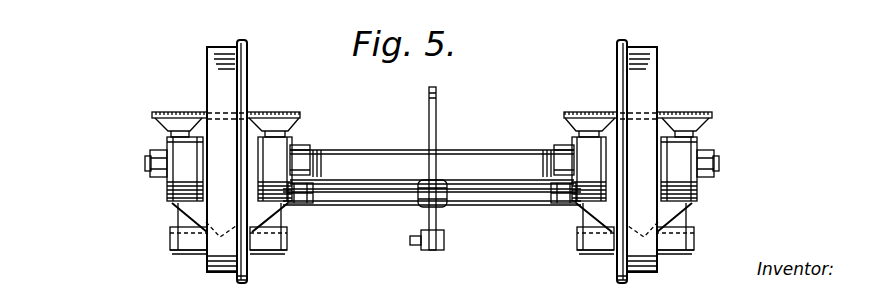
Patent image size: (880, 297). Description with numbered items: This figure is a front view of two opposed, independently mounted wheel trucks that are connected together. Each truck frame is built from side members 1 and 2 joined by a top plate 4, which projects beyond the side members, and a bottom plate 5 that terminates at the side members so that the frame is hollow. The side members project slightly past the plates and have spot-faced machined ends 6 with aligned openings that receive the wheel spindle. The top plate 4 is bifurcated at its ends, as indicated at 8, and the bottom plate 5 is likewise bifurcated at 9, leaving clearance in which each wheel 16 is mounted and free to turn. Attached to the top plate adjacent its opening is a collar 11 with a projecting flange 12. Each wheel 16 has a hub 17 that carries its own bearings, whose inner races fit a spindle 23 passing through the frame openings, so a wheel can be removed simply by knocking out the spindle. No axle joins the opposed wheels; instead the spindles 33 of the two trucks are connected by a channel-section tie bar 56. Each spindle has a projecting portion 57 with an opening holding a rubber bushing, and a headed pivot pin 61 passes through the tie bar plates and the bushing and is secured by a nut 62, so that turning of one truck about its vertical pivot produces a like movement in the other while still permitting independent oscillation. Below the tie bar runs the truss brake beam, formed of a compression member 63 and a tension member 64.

The side member 1 is at (173, 228).
The side member 2 is at (275, 227).
The top plate 4 is at (185, 126).
The bottom plate 5 is at (193, 251).
The spot-faced machined end 6 is at (167, 183).
The bifurcation of top plate 8 is at (213, 117).
The bifurcation of bottom plate 9 is at (190, 208).
The collar 11 is at (178, 117).
The projecting flange 12 is at (262, 117).
The wheel 16 is at (220, 72).
The hub 17 is at (185, 147).
The spindle 23 is at (712, 174).
The spindle 33 is at (150, 162).
The tie bar 56 is at (478, 136).
The projecting portion of spindle 57 is at (325, 158).
The headed pivot pin 61 is at (300, 150).
The nut 62 is at (308, 192).
The compression member 63 is at (372, 205).
The tension member 64 is at (487, 196).